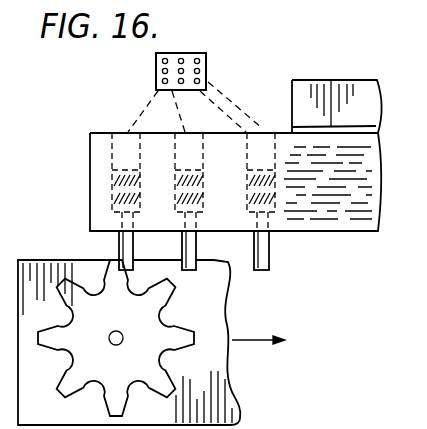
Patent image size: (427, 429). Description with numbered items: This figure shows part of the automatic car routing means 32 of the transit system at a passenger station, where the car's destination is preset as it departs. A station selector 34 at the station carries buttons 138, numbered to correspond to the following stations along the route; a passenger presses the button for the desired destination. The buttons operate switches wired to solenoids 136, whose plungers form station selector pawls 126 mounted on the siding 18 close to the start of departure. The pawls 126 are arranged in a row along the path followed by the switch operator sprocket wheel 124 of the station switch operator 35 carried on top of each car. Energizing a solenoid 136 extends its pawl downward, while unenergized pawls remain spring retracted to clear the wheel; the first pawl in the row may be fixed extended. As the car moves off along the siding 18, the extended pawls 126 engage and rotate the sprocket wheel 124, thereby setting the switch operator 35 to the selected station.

The station selector 34 is at (149, 70).
The buttons 138 is at (182, 58).
The siding 18 is at (332, 80).
The automatic car routing means 32 is at (80, 166).
The solenoids 136 is at (278, 205).
The station selector pawls 126 is at (267, 271).
The switch operator sprocket wheel 124 is at (186, 328).
The station switch operator 35 is at (84, 262).